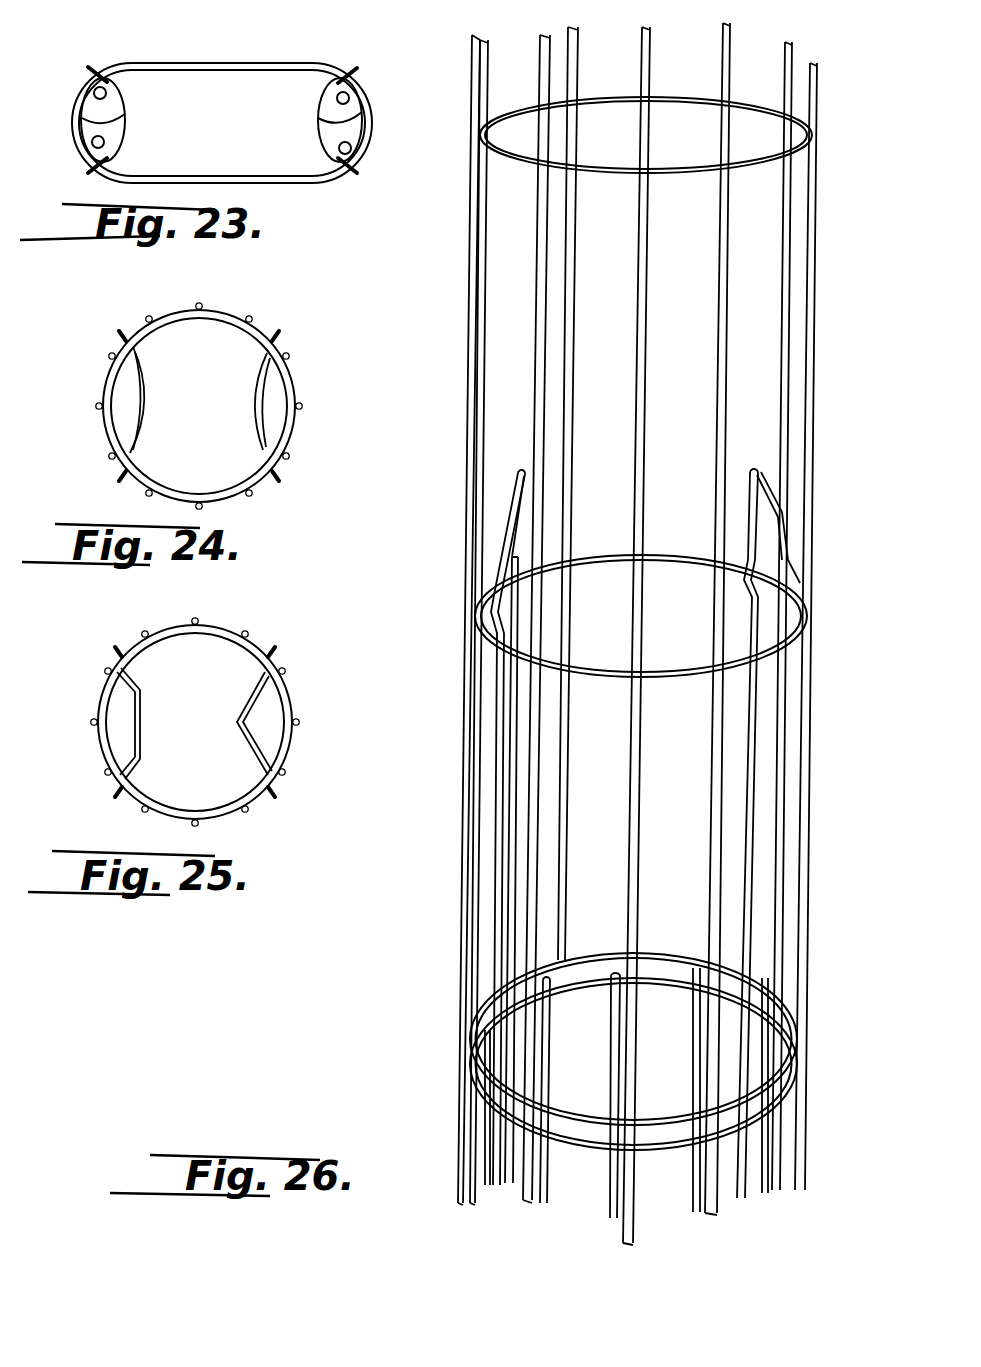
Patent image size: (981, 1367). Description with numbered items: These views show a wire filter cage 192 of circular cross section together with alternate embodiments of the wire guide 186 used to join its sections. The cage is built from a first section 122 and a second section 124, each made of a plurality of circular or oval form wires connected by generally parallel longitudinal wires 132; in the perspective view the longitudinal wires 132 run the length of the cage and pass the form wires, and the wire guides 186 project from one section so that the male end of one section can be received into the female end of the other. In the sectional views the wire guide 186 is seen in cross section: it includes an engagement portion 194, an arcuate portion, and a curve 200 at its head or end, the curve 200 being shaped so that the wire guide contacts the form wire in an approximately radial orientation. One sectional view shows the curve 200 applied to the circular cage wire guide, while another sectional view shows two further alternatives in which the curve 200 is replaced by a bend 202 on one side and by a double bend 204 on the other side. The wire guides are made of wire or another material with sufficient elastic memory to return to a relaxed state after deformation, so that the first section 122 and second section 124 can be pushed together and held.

In FIG. 26, the first section 122 is at (812, 750).
In FIG. 26, the second section 124 is at (700, 965).
In FIG. 23, the longitudinal wires 132 is at (107, 74).
In FIG. 24, the longitudinal wires 132 is at (257, 325).
In FIG. 25, the longitudinal wires 132 is at (256, 640).
In FIG. 26, the longitudinal wires 132 is at (530, 472).
In FIG. 26, the wire guide 186 is at (750, 492).
In FIG. 26, the wire filter cage 192 is at (616, 634).
In FIG. 24, the engagement portion 194 is at (272, 486).
In FIG. 25, the engagement portion 194 is at (268, 792).
In FIG. 26, the engagement portion 194 is at (641, 616).
In FIG. 23, the curve 200 is at (85, 120).
In FIG. 24, the curve 200 is at (138, 378).
In FIG. 25, the bend 202 is at (262, 700).
In FIG. 25, the double bend 204 is at (128, 698).